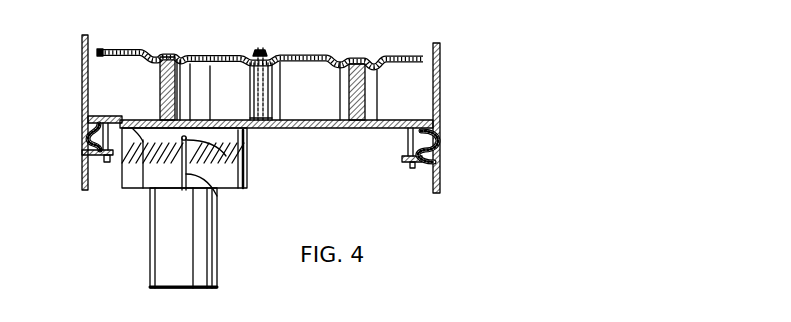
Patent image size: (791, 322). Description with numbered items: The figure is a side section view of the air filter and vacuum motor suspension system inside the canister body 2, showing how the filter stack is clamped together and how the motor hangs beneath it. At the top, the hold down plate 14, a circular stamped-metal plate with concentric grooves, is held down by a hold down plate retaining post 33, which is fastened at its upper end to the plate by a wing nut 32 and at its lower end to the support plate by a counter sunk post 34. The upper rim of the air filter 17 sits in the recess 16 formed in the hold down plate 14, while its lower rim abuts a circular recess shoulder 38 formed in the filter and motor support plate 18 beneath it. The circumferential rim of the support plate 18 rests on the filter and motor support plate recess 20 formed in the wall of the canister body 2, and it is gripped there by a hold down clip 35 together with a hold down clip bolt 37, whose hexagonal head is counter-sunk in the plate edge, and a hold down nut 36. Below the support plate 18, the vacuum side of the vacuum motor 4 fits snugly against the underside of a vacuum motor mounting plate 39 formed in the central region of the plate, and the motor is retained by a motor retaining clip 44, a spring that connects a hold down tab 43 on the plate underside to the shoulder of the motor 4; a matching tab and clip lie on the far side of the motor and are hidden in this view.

The canister body 2 is at (440, 74).
The vacuum motor 4 is at (208, 240).
The hold down plate 14 is at (133, 49).
The recess 16 is at (357, 60).
The air filter 17 is at (178, 80).
The filter and motor support plate 18 is at (341, 128).
The filter and motor support plate recess 20 is at (88, 138).
The wing nut 32 is at (252, 52).
The hold down plate retaining post 33 is at (276, 74).
The counter sunk post 34 is at (261, 130).
The hold down clip 35 is at (84, 172).
The hold down nut 36 is at (107, 163).
The hold down clip bolt 37 is at (88, 126).
The circular recess shoulder 38 is at (160, 88).
The vacuum motor mounting plate 39 is at (144, 190).
The hold down tab 43 is at (246, 162).
The motor retaining clip 44 is at (213, 191).